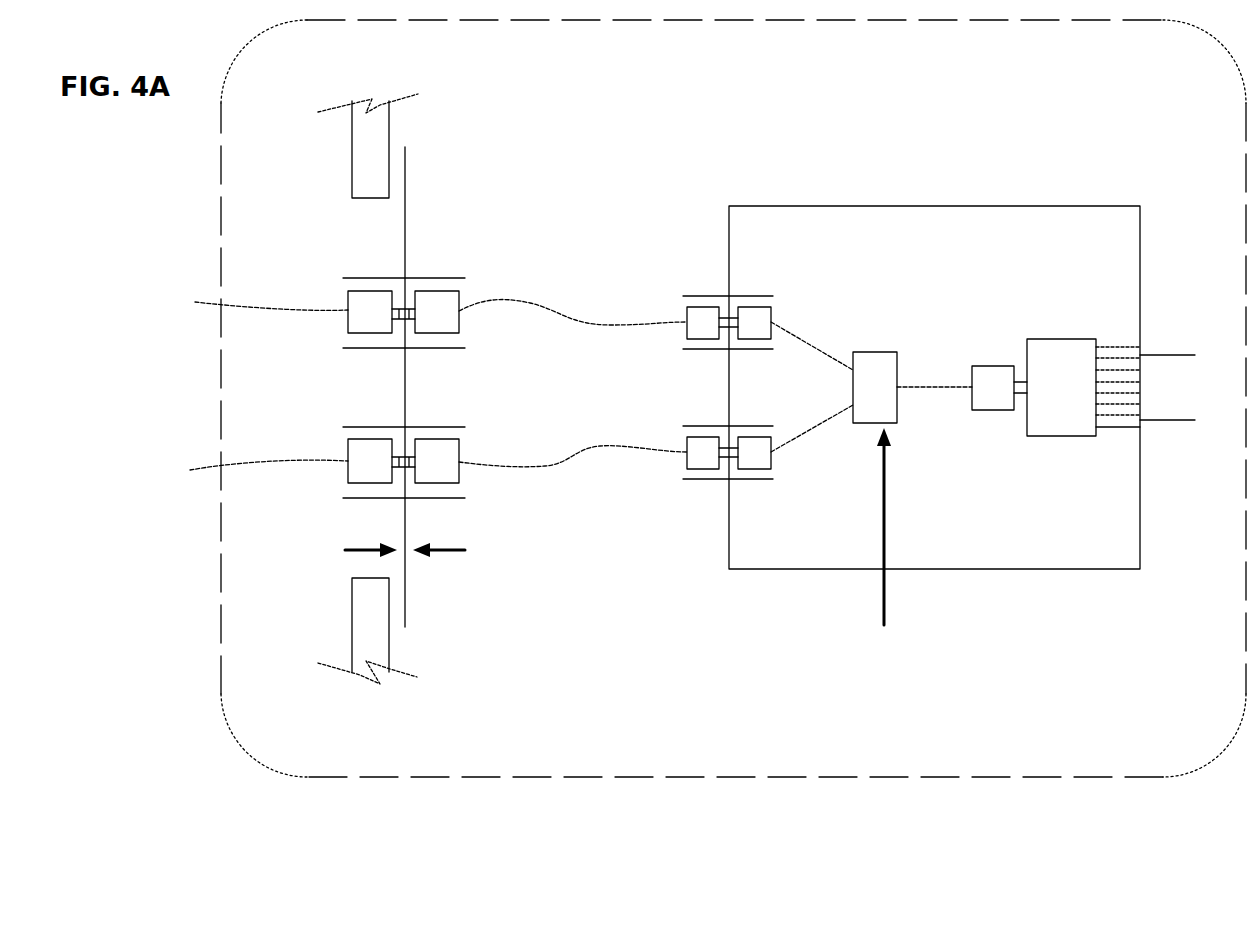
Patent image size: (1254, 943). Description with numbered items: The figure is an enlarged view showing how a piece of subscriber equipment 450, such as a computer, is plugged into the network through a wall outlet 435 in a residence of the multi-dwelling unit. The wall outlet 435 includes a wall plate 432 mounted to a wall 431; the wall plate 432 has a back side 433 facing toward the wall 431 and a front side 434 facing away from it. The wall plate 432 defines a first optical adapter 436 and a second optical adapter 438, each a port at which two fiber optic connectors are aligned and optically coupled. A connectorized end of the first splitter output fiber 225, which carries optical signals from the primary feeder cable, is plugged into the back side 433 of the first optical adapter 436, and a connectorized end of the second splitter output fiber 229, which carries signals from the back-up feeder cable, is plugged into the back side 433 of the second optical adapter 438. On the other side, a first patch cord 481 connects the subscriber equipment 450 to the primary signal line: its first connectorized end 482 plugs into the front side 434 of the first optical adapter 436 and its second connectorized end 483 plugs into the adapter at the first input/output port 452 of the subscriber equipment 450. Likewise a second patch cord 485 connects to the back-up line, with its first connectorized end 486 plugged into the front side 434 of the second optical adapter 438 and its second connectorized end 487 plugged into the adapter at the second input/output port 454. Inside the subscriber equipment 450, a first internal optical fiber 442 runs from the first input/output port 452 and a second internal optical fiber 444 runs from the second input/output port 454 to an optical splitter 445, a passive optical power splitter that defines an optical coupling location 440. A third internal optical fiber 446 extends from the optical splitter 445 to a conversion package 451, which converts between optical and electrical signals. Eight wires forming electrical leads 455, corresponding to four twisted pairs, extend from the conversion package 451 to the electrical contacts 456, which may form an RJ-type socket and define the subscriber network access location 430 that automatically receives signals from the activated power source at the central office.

The first splitter output fiber 225 is at (235, 300).
The second splitter output fiber 229 is at (252, 452).
The subscriber network access location 430 is at (1144, 377).
The wall 431 is at (362, 602).
The wall plate 432 is at (397, 218).
The back side 433 is at (347, 550).
The front side 434 is at (462, 550).
The wall outlet 435 is at (427, 132).
The first optical adapter 436 is at (393, 275).
The second optical adapter 438 is at (393, 426).
The optical coupling location 440 is at (893, 538).
The first internal optical fiber 442 is at (815, 340).
The second internal optical fiber 444 is at (813, 430).
The optical splitter 445 is at (882, 356).
The third internal optical fiber 446 is at (933, 395).
The subscriber equipment 450 is at (805, 584).
The conversion package 451 is at (1058, 358).
The first input/output port 452 is at (691, 252).
The second input/output port 454 is at (691, 502).
The electrical leads 455 is at (1111, 428).
The electrical contacts 456 is at (1162, 430).
The first patch cord 481 is at (571, 326).
The first connectorized end 482 is at (448, 303).
The second connectorized end 483 is at (693, 305).
The second patch cord 485 is at (588, 445).
The first connectorized end 486 is at (448, 447).
The second connectorized end 487 is at (693, 462).